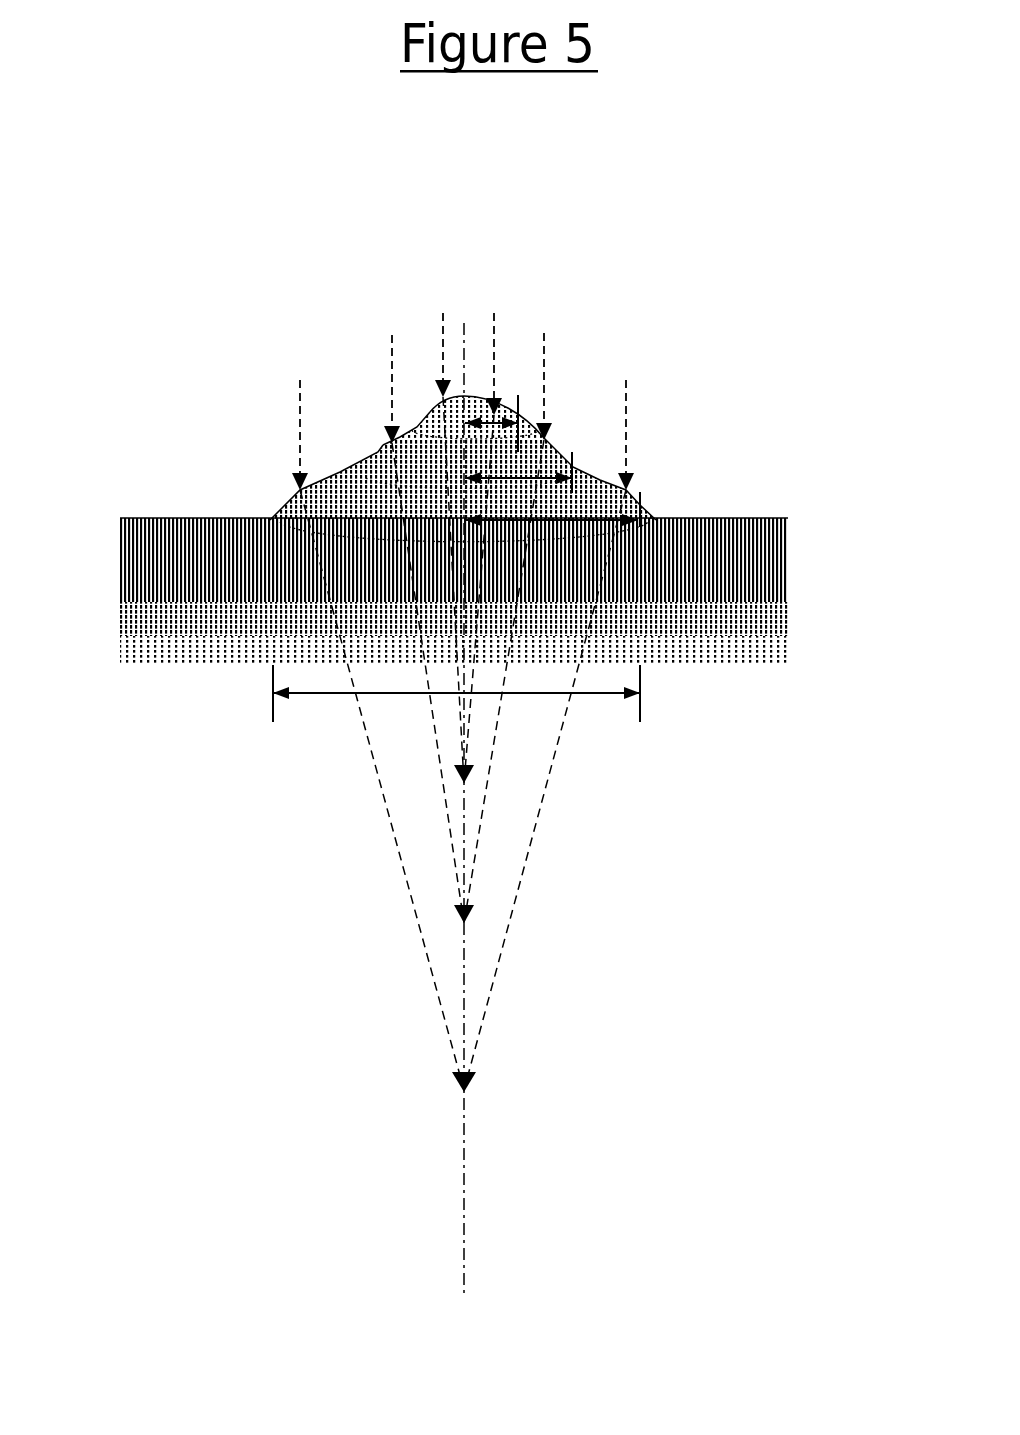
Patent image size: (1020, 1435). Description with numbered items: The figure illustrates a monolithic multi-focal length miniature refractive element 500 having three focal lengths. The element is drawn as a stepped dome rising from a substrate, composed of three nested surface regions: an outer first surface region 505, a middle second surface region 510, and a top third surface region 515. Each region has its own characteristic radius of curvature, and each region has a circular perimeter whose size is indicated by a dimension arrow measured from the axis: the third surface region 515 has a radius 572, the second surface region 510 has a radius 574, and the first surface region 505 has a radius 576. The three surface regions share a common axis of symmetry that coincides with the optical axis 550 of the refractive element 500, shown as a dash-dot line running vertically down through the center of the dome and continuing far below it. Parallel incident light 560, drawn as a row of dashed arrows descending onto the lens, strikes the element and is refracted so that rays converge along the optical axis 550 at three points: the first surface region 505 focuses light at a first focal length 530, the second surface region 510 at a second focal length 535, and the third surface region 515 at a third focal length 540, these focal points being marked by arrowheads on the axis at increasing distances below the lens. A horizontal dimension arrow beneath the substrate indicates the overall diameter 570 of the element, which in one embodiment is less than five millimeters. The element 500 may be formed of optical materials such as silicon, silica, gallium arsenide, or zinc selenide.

The multi-focal length miniature refractive element 500 is at (451, 387).
The first surface region 505 is at (297, 493).
The second surface region 510 is at (383, 443).
The third surface region 515 is at (437, 410).
The first focal length 530 is at (474, 1087).
The second focal length 535 is at (485, 905).
The third focal length 540 is at (485, 777).
The optical axis 550 is at (462, 992).
The parallel incident light 560 is at (463, 308).
The diameter 570 is at (423, 693).
The radius 572 is at (492, 410).
The radius 574 is at (517, 477).
The radius 576 is at (603, 513).